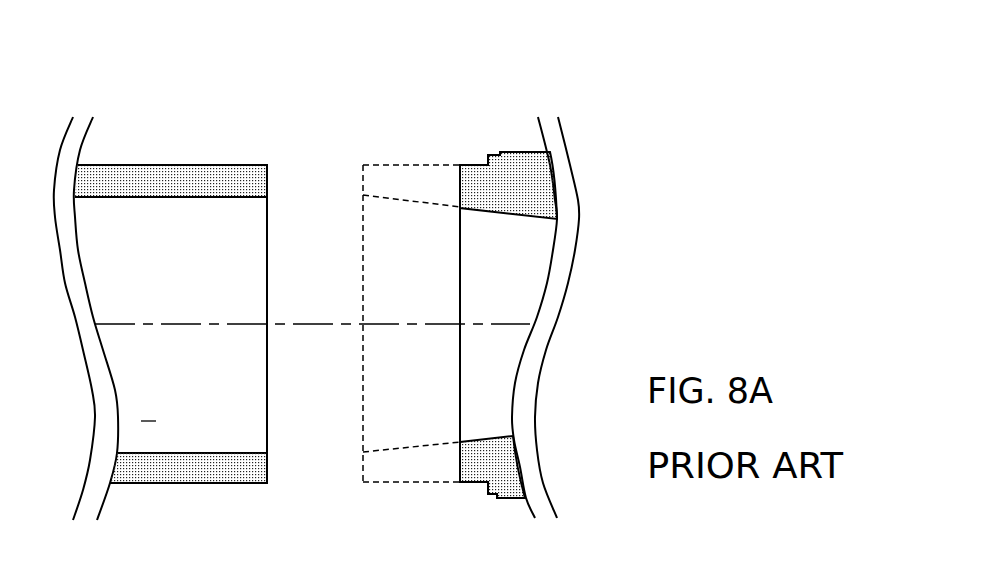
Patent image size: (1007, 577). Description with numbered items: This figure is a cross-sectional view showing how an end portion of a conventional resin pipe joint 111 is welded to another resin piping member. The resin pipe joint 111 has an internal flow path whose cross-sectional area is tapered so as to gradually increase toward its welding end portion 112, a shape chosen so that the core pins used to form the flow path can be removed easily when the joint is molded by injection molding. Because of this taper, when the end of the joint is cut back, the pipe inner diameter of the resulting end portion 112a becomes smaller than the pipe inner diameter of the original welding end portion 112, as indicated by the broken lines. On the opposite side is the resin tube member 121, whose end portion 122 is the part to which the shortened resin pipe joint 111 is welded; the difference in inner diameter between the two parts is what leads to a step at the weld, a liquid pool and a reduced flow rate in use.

The resin pipe joint 111 is at (510, 125).
The welding end portion 112 is at (356, 166).
The end portion 112a is at (459, 178).
The resin tube member 121 is at (151, 135).
The end portion 122 is at (271, 180).